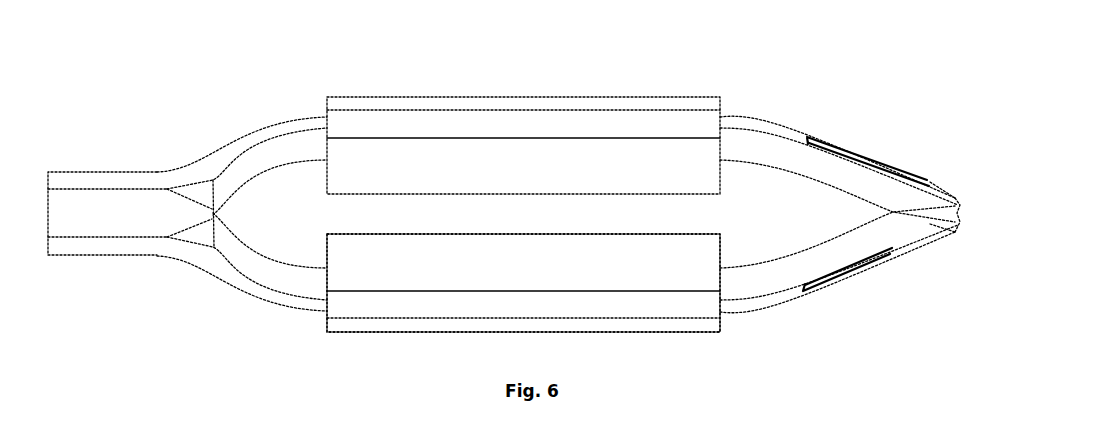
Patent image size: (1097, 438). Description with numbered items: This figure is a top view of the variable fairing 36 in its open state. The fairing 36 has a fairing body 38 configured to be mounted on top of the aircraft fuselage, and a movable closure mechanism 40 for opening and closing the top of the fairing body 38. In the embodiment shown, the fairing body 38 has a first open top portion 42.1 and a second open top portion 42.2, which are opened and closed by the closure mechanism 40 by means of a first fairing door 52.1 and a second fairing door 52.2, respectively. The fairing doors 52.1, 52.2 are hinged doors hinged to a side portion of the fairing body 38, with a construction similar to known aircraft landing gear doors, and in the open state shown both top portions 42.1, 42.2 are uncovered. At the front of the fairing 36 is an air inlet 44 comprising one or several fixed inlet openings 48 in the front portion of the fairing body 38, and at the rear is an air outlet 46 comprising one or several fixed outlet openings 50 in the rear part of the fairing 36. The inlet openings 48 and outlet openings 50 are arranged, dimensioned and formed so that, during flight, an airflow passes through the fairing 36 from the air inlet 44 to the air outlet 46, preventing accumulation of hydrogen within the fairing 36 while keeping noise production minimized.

The fairing 36 is at (293, 87).
The fairing body 38 is at (229, 230).
The closure mechanism 40 is at (700, 335).
The first open top portion 42.1 is at (348, 253).
The second open top portion 42.2 is at (673, 168).
The air inlet 44 is at (162, 283).
The air outlet 46 is at (861, 280).
The fixed inlet openings 48 is at (213, 178).
The fixed outlet openings 50 is at (860, 157).
The first fairing door 52.1 is at (463, 318).
The second fairing door 52.2 is at (482, 110).